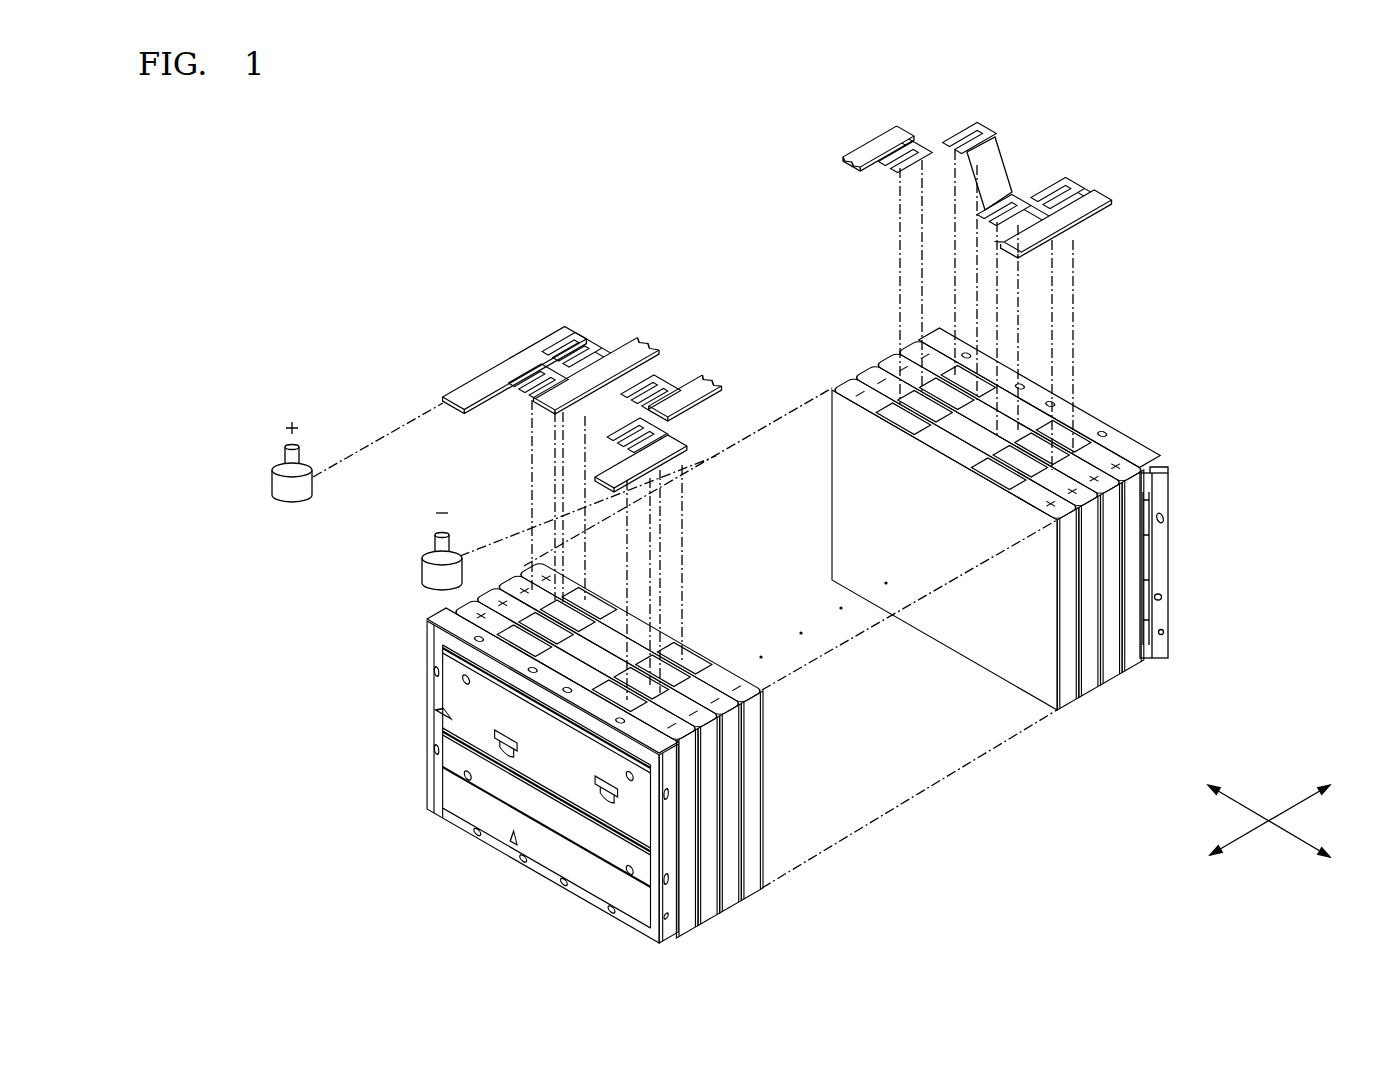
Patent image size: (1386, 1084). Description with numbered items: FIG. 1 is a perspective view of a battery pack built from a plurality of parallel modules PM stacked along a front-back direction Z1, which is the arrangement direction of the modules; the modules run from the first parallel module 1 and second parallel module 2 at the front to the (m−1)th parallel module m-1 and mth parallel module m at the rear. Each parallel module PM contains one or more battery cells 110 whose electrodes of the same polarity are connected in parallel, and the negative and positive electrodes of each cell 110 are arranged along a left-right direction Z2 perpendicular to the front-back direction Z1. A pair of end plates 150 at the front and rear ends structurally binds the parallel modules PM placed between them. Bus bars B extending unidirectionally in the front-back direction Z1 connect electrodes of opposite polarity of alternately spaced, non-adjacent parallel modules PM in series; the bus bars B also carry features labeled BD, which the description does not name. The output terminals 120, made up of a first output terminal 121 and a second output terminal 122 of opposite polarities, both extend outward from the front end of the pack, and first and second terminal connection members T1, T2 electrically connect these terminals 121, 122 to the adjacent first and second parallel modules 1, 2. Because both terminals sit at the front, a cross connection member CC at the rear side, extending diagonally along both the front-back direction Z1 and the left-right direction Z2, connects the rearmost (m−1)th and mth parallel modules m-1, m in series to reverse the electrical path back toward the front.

The first parallel module 1 is at (723, 913).
The second parallel module 2 is at (771, 888).
The battery cell 110 is at (1133, 593).
The output terminals 120 is at (320, 531).
The first output terminal 121 is at (402, 569).
The second output terminal 122 is at (282, 492).
The end plate 150 is at (1158, 562).
The bus bar B is at (618, 358).
The bus bar bent portion BD is at (552, 373).
The cross connection member CC is at (992, 163).
The first terminal connection member T1 is at (615, 470).
The second terminal connection member T2 is at (483, 372).
The parallel module PM is at (1087, 658).
The mth parallel module m is at (1151, 670).
The (m−1)th parallel module m-1 is at (1104, 698).
The front-back direction Z1 is at (1255, 831).
The left-right direction Z2 is at (1255, 811).